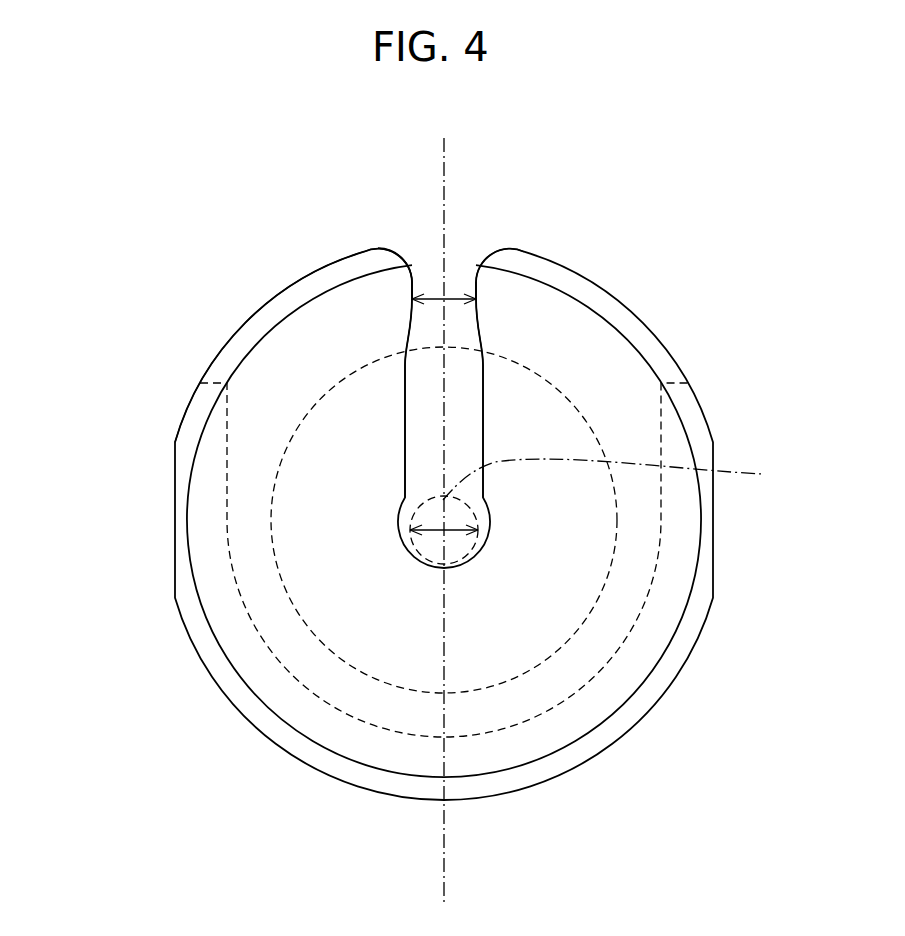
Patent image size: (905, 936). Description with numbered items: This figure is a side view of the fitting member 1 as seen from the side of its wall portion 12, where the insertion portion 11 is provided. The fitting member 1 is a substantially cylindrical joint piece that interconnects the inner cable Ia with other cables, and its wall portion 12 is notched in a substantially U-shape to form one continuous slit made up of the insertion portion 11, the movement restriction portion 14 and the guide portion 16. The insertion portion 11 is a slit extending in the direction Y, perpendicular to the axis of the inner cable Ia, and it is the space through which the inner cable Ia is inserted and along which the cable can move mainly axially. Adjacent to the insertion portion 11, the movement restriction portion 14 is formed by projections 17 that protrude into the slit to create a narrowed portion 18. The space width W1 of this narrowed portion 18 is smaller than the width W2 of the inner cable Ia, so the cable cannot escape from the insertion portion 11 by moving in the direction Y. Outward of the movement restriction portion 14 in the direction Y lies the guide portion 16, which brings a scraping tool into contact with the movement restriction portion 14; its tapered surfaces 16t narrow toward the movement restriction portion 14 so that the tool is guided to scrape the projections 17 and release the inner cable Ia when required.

The fitting member 1 is at (154, 698).
The insertion portion 11 is at (483, 404).
The wall portion 12 is at (627, 390).
The movement restriction portion 14 is at (478, 299).
The guide portion 16 is at (402, 277).
The tapered surfaces 16t is at (414, 268).
The projections 17 is at (412, 297).
The narrowed portion 18 is at (474, 286).
The space width of narrowed portion W1 is at (412, 299).
The width of inner cable W2 is at (437, 528).
The direction perpendicular to axis Y is at (446, 153).
The inner cable Ia is at (613, 479).